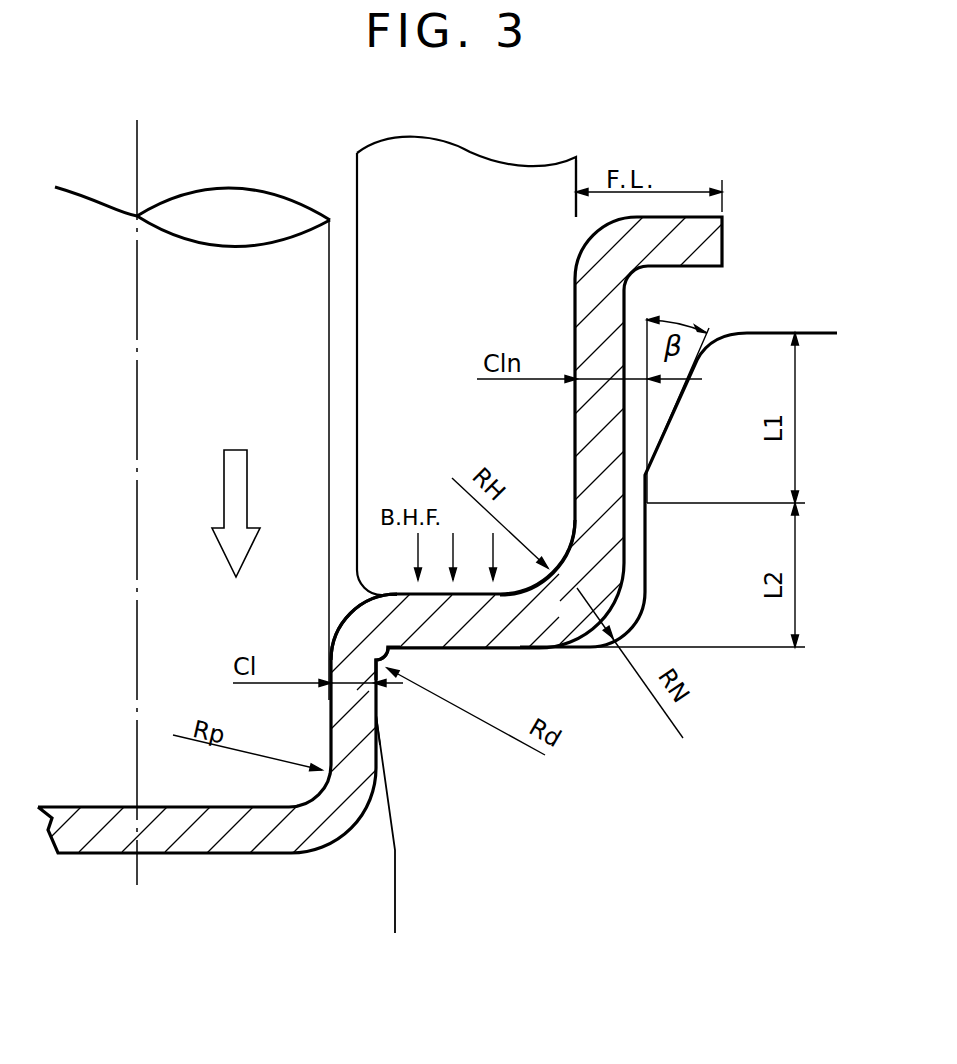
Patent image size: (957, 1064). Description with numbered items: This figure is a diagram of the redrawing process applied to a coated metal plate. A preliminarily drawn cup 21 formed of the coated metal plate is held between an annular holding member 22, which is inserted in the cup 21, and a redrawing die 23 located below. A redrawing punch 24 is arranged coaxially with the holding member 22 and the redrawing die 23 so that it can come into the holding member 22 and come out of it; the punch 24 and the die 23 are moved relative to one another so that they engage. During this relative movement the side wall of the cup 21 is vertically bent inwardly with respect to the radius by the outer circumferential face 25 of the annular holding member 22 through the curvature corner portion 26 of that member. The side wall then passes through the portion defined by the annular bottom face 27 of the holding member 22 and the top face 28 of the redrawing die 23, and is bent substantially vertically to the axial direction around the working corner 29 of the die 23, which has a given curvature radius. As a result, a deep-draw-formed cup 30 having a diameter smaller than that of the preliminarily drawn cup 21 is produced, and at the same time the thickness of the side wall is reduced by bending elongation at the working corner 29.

The preliminarily drawn cup 21 is at (608, 318).
The annular holding member 22 is at (452, 306).
The redrawing die 23 is at (572, 894).
The redrawing punch 24 is at (190, 390).
The outer circumferential face 25 is at (576, 222).
The blank holder corner radius 26 is at (560, 560).
The annular bottom face 27 is at (405, 597).
The top face 28 is at (555, 650).
The working corner 29 is at (385, 650).
The deep-draw-formed cup 30 is at (377, 727).